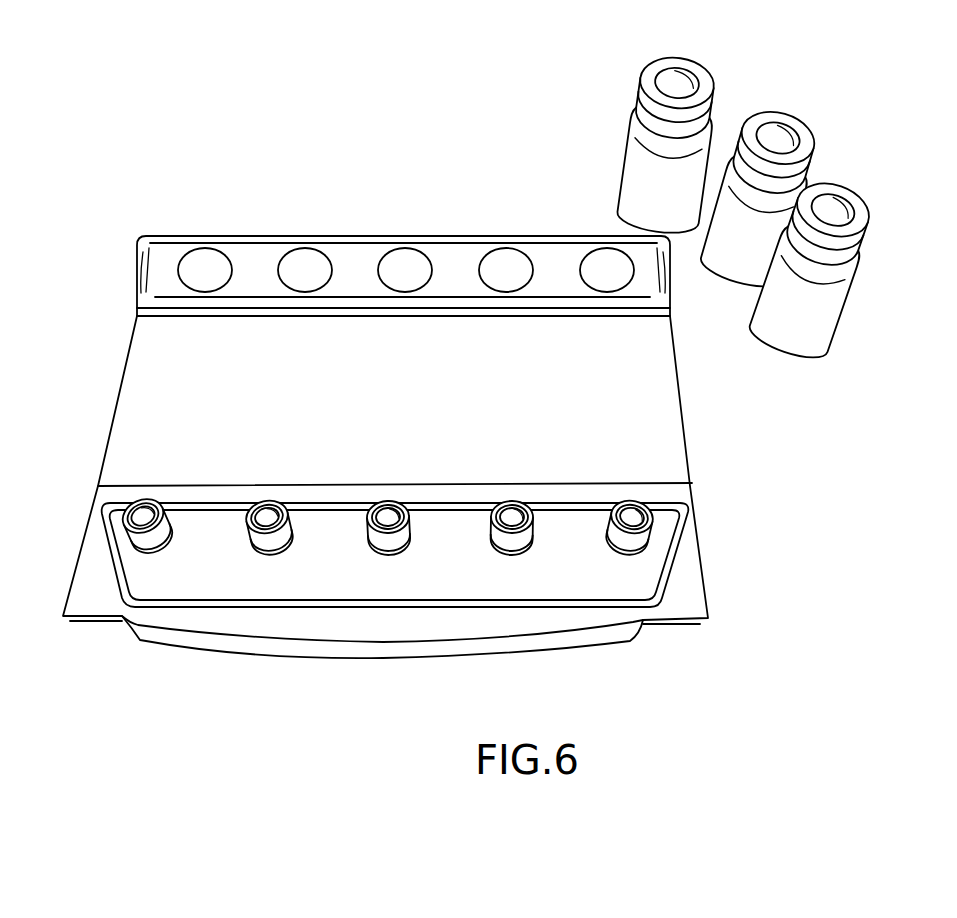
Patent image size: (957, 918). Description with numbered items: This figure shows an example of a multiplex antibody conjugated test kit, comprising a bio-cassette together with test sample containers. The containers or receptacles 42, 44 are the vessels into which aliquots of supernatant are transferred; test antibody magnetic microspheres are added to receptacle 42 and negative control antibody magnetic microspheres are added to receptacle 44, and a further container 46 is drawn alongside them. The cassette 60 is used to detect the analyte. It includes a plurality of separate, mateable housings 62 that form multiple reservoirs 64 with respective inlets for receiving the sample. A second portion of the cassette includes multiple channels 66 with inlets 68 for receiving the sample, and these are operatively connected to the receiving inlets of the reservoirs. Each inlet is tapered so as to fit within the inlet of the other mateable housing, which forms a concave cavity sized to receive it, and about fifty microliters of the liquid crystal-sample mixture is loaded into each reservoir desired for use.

The receptacle 42 is at (711, 83).
The receptacle 44 is at (814, 147).
The reagent vial 46 is at (869, 222).
The cassette 60 is at (411, 418).
The mateable housing 62 is at (634, 515).
The reservoir 64 is at (514, 513).
The channel 66 is at (302, 264).
The inlet 68 is at (404, 264).